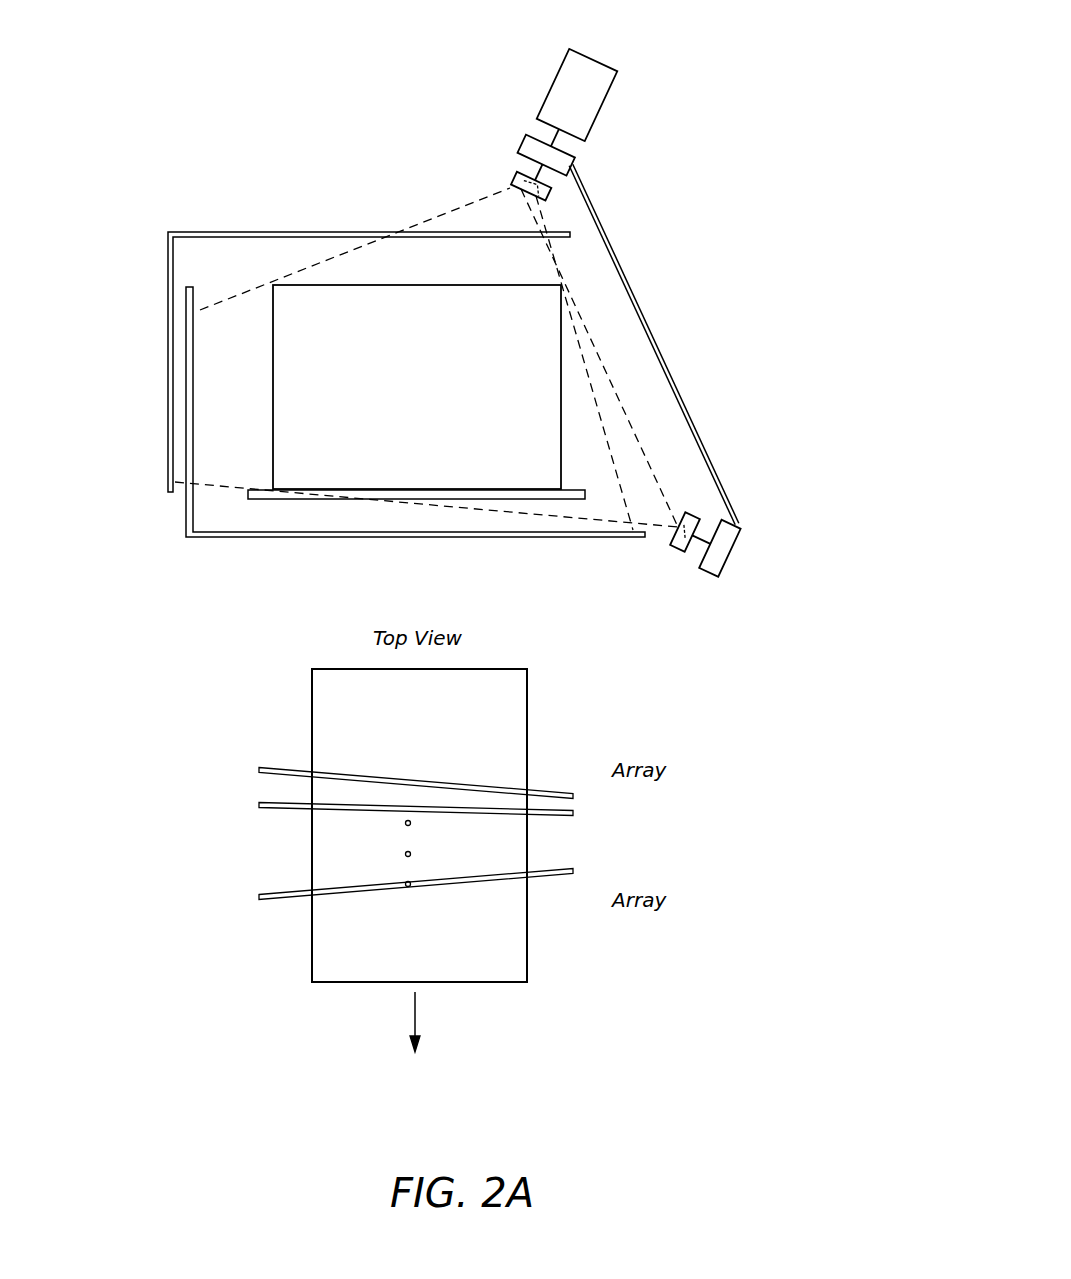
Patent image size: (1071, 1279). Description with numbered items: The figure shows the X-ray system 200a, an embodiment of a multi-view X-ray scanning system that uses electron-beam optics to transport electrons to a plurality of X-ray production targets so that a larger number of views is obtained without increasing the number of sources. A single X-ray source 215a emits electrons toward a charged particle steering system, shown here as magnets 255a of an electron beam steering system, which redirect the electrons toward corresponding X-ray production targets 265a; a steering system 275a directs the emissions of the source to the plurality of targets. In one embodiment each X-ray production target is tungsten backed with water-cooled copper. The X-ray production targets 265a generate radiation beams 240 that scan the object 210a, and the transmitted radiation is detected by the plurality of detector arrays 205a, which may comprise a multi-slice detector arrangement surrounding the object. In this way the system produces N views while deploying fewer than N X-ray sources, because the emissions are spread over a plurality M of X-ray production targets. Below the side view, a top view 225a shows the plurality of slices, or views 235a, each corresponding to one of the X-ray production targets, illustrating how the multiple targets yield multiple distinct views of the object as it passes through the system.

The X-ray system 200a is at (104, 106).
The detector arrays 205a is at (196, 232).
The object 210a is at (362, 284).
The X-ray source 215a is at (607, 82).
The top view 225a is at (323, 709).
The slices or views 235a is at (278, 892).
The radiation beams 240 is at (257, 290).
The electron beam steering system magnets 255a is at (572, 164).
The X-ray production targets 265a is at (648, 580).
The steering system 275a is at (640, 296).